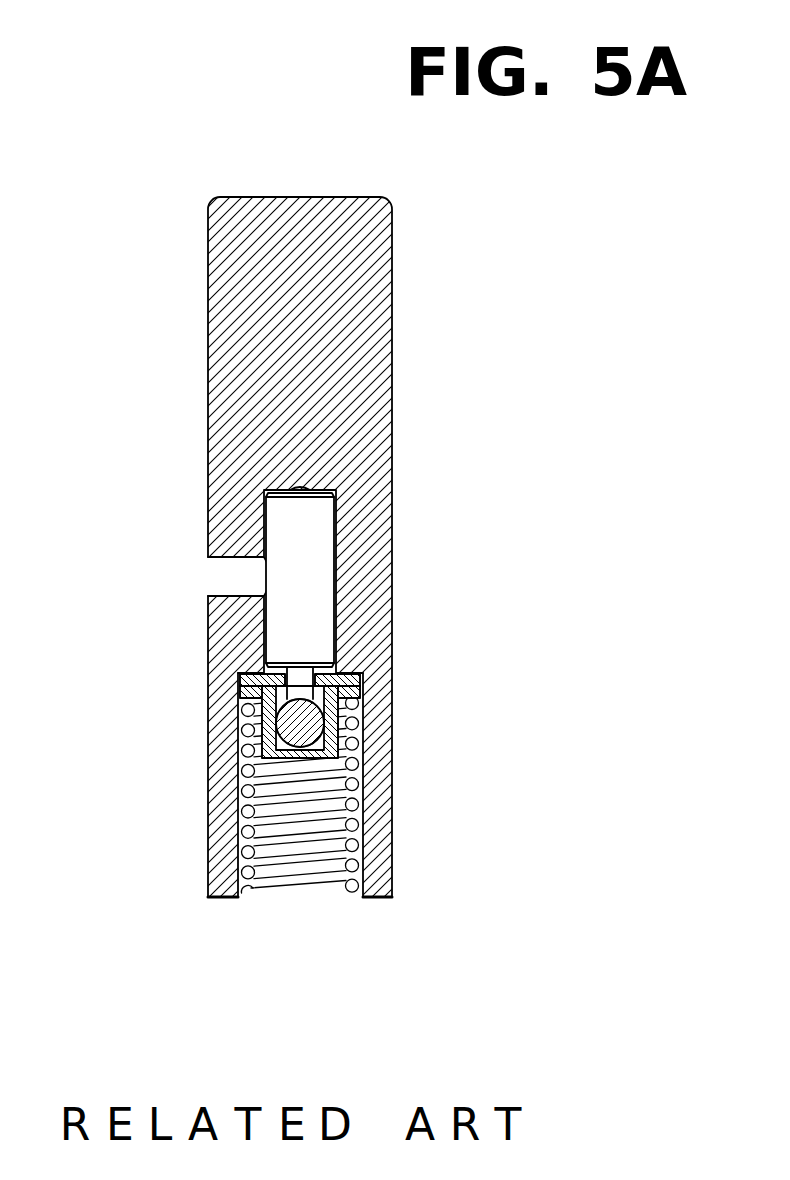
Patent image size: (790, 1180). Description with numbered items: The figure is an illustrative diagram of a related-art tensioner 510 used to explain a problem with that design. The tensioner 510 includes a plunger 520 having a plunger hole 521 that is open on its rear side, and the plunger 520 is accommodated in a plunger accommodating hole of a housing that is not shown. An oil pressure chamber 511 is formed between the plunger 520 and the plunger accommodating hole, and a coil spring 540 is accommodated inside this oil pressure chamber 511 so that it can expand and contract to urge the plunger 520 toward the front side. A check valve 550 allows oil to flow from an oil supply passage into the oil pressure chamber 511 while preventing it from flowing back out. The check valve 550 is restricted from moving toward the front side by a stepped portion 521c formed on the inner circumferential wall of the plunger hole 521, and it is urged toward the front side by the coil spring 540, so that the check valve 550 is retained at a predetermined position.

The tensioner 510 is at (169, 136).
The plunger 520 is at (352, 257).
The oil pressure chamber 511 is at (327, 825).
The plunger hole 521 is at (262, 712).
The stepped portion 521c is at (345, 663).
The coil spring 540 is at (247, 774).
The check valve 550 is at (302, 628).